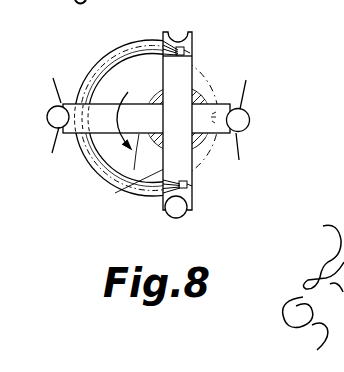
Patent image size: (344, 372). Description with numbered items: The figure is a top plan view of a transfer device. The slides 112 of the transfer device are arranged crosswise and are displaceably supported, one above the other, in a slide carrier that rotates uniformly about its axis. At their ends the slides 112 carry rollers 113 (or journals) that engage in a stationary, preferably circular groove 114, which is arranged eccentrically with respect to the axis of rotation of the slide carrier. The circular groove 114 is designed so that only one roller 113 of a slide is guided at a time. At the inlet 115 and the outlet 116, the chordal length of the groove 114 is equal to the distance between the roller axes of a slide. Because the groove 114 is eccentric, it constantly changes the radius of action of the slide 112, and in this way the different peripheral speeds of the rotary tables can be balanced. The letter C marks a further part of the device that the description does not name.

The slides 112 is at (140, 190).
The rollers 113 is at (75, 134).
The circular groove 114 is at (93, 74).
The inlet 115 is at (168, 52).
The outlet 116 is at (192, 186).
The carriage C is at (252, 45).